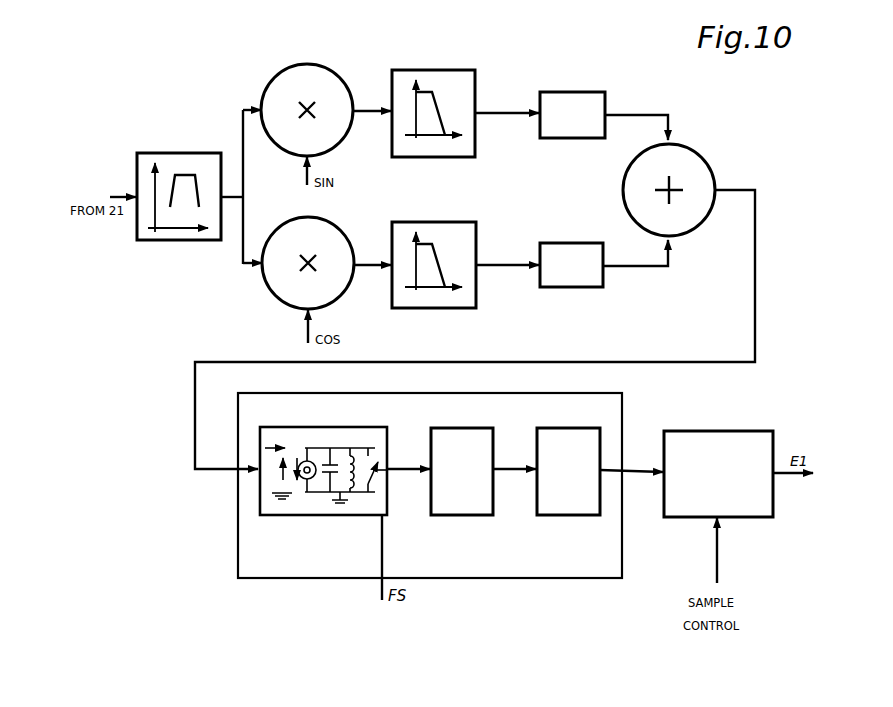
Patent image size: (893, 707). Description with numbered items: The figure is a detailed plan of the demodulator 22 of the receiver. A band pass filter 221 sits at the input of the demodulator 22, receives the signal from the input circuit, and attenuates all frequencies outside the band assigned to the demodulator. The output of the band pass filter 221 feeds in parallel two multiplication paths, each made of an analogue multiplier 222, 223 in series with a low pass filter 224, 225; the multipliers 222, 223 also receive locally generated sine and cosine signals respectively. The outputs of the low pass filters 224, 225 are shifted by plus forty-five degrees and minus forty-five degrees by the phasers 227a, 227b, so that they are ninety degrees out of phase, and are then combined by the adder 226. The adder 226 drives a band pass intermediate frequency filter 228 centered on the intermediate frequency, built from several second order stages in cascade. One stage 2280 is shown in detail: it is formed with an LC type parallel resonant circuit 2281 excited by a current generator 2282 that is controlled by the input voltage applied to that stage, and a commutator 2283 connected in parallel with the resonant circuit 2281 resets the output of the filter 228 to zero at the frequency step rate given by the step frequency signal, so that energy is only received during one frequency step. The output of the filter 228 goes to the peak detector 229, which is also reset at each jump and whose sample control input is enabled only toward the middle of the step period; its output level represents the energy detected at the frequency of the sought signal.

The demodulator 22 is at (766, 305).
The band pass filter 221 is at (191, 153).
The analogue multiplier 222 is at (302, 66).
The analogue multiplier 223 is at (287, 229).
The low pass filter 224 is at (437, 70).
The low pass filter 225 is at (418, 222).
The adder 226 is at (690, 156).
The phaser 227a is at (578, 92).
The phaser 227b is at (570, 243).
The intermediate frequency filter 228 is at (268, 578).
The stage 2280 is at (553, 515).
The LC type parallel resonant circuit 2281 is at (342, 458).
The current generator 2282 is at (304, 458).
The commutator 2283 is at (372, 457).
The peak detector 229 is at (716, 431).